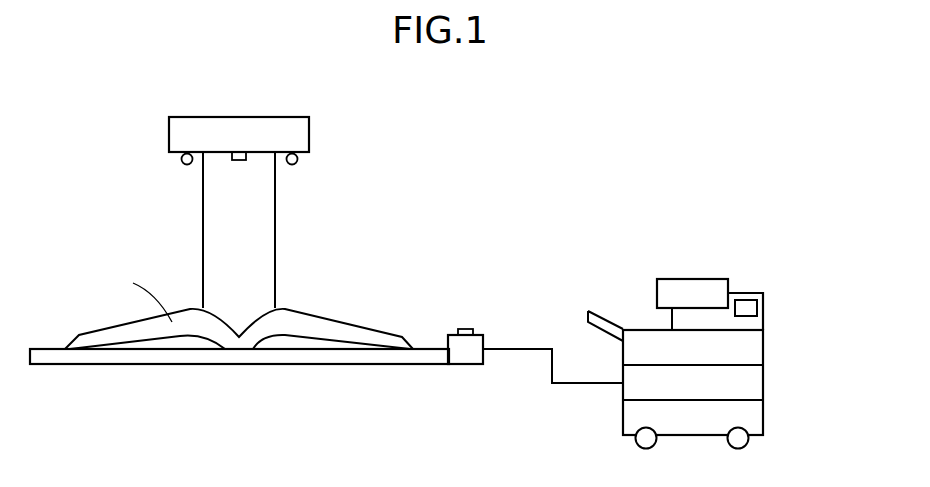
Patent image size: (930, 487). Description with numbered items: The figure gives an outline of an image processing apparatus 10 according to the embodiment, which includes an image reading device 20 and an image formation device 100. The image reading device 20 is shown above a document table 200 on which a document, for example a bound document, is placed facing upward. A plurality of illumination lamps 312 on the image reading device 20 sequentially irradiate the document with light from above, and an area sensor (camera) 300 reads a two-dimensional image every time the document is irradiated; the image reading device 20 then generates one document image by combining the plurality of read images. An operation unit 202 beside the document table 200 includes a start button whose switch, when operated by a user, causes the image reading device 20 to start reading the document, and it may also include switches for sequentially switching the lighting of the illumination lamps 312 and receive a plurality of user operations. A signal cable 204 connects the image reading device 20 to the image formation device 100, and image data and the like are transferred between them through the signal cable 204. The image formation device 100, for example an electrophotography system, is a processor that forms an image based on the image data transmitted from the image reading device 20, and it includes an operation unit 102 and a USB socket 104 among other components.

The image processing apparatus 10 is at (512, 176).
The image reading device 20 is at (314, 136).
The illumination lamps 312 is at (183, 165).
The area sensor (camera) 300 is at (240, 163).
The document table 200 is at (335, 366).
The operation unit 202 is at (463, 326).
The signal cable 204 is at (552, 383).
The image formation device 100 is at (770, 382).
The operation unit 102 is at (693, 287).
The USB socket 104 is at (747, 299).